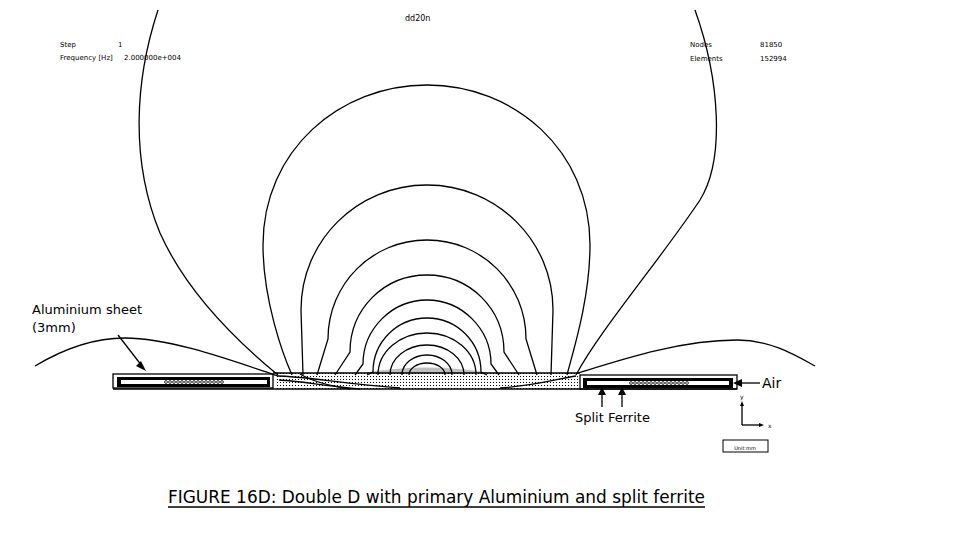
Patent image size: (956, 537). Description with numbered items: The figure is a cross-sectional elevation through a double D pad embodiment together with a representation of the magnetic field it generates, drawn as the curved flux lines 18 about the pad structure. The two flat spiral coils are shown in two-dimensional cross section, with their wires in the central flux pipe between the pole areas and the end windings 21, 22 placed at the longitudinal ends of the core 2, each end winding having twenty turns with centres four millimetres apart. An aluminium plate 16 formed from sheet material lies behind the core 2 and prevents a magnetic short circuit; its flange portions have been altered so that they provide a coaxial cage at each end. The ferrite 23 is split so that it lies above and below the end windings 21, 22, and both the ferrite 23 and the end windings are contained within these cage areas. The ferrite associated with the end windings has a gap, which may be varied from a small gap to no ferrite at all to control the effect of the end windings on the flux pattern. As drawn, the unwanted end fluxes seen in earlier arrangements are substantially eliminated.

The core 2 is at (495, 375).
The aluminium plate 16 is at (136, 374).
The flux pattern 18 is at (565, 157).
The end winding 21 is at (182, 387).
The end winding 22 is at (667, 388).
The ferrite 23 is at (245, 388).